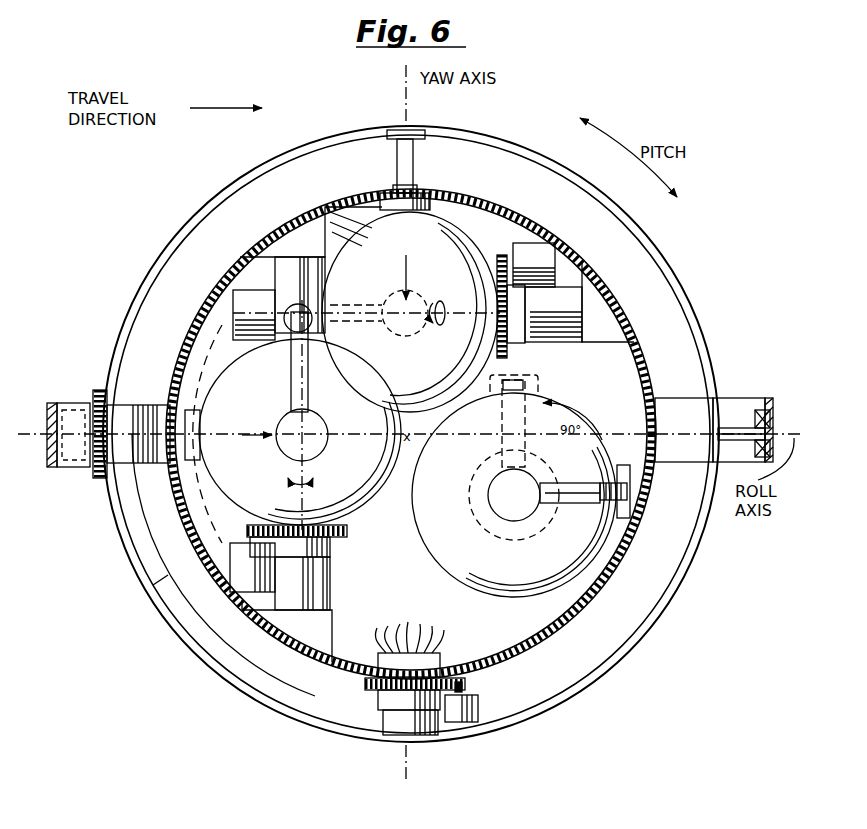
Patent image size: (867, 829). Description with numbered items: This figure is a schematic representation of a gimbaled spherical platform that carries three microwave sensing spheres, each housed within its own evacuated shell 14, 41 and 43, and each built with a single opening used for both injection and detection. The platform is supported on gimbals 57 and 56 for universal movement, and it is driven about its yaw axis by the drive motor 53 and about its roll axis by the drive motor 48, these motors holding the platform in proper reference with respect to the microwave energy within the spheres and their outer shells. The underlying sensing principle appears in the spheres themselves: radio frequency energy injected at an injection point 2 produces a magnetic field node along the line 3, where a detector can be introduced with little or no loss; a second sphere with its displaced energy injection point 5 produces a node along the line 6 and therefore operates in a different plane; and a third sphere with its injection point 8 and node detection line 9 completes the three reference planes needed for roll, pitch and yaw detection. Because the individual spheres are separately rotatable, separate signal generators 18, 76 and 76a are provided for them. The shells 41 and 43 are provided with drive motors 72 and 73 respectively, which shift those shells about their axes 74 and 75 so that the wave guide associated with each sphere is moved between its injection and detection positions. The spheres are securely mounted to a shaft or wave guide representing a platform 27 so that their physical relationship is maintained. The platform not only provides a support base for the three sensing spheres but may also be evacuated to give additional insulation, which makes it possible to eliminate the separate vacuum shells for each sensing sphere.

The injection point 2 is at (609, 486).
The magnetic field node line 3 is at (506, 392).
The energy injection point 5 is at (399, 211).
The magnetic field node line 6 is at (406, 324).
The injection point 8 is at (299, 449).
The magnetic field node detection line 9 is at (202, 442).
The evacuated shell 14 is at (582, 416).
The signal generator 18 is at (495, 505).
The platform 27 is at (520, 208).
The evacuated shell 41 is at (447, 231).
The evacuated shell 43 is at (363, 522).
The roll axis drive motor 48 is at (77, 404).
The yaw axis drive motor 53 is at (477, 708).
The gimbal 56 is at (723, 400).
The gimbal 57 is at (663, 266).
The drive motor 72 is at (527, 249).
The drive motor 73 is at (229, 551).
The shell axis 74 is at (446, 317).
The shell axis 75 is at (295, 488).
The signal generator 76 is at (265, 294).
The signal generator 76a is at (329, 289).